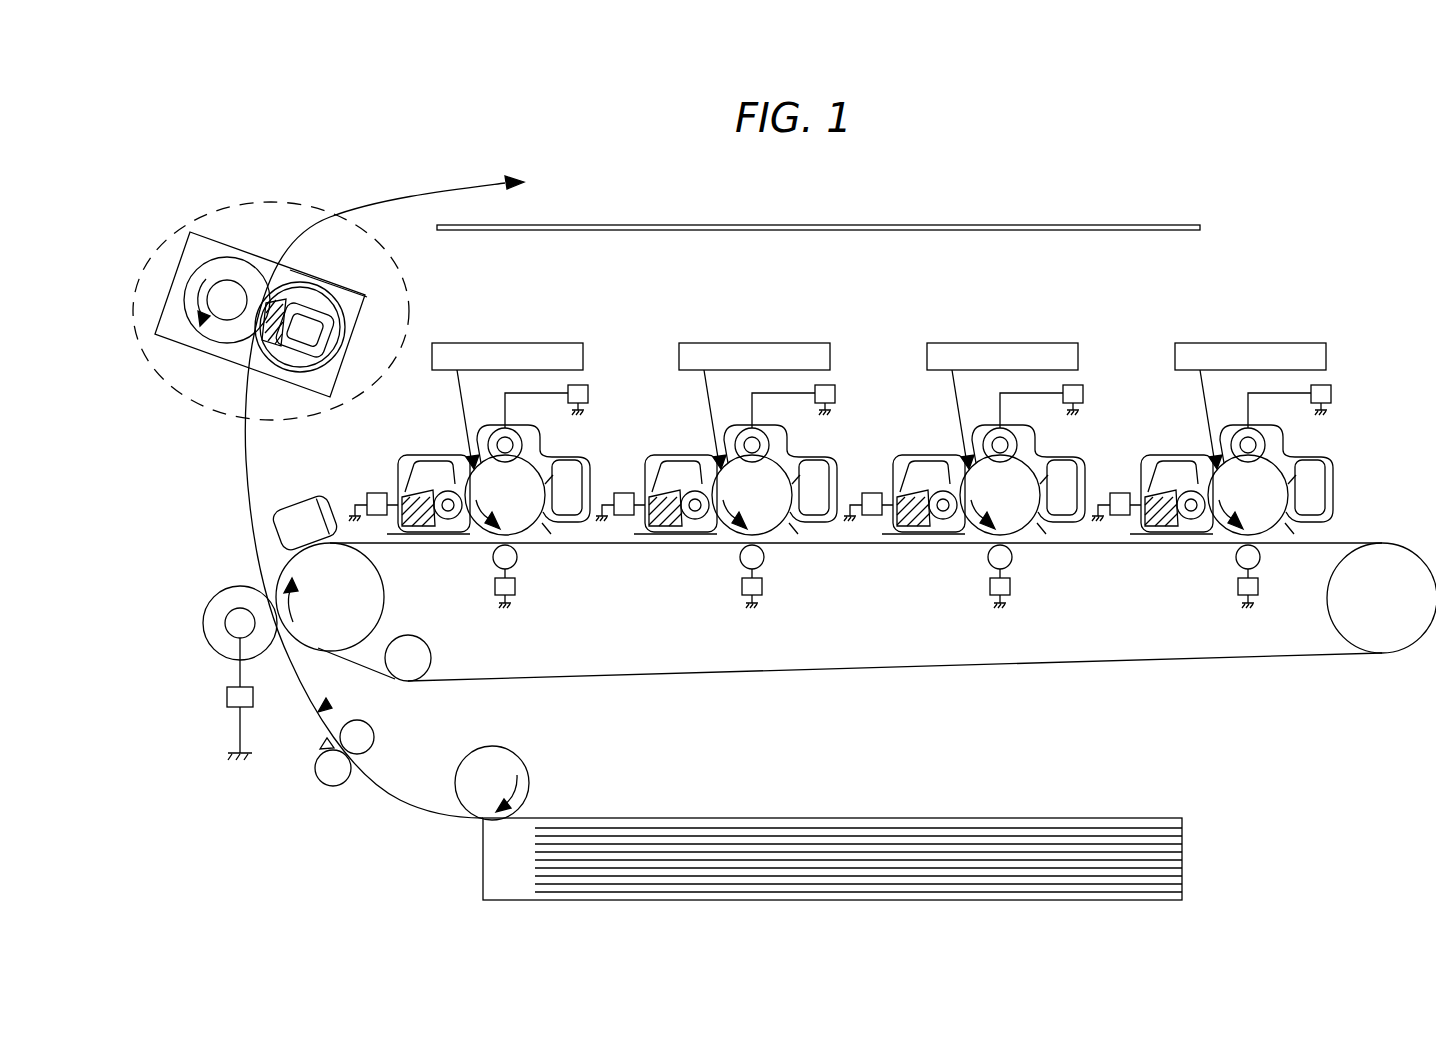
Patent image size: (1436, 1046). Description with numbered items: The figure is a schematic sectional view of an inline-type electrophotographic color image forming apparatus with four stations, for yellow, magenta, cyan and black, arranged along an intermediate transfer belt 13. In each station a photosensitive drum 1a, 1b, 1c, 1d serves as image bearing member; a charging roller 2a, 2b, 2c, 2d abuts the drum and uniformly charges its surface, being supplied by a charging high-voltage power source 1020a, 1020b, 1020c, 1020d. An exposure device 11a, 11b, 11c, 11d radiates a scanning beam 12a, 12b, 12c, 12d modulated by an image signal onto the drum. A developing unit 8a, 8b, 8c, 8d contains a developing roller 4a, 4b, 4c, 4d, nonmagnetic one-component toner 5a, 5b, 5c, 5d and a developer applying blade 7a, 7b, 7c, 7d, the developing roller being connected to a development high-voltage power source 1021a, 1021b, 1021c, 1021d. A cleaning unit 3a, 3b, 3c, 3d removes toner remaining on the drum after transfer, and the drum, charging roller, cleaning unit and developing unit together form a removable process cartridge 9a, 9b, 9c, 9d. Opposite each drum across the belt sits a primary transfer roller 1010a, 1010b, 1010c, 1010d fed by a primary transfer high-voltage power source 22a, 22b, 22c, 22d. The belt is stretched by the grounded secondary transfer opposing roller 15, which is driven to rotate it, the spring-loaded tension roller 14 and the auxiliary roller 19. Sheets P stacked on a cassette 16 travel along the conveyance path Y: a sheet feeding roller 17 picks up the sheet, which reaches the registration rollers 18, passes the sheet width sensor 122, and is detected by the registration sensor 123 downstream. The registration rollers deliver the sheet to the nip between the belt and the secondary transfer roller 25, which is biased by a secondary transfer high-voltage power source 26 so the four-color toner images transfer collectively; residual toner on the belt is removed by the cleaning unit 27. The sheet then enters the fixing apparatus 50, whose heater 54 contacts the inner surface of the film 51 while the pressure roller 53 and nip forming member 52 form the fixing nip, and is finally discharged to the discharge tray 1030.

The photosensitive drum 1a is at (528, 522).
The photosensitive drum 1b is at (770, 519).
The photosensitive drum 1c is at (1017, 519).
The photosensitive drum 1d is at (1266, 519).
The charging roller 2a is at (502, 428).
The charging roller 2b is at (746, 427).
The charging roller 2c is at (994, 427).
The charging roller 2d is at (1242, 427).
The cleaning unit 3a is at (566, 462).
The cleaning unit 3b is at (810, 471).
The cleaning unit 3c is at (1058, 471).
The cleaning unit 3d is at (1306, 471).
The developing roller 4a is at (446, 519).
The developing roller 4b is at (665, 530).
The developing roller 4c is at (913, 530).
The developing roller 4d is at (1161, 530).
The nonmagnetic one-component toner 5a is at (392, 534).
The nonmagnetic one-component toner 5b is at (662, 536).
The nonmagnetic one-component toner 5c is at (910, 536).
The nonmagnetic one-component toner 5d is at (1158, 536).
The developer applying blade 7a is at (450, 490).
The developer applying blade 7b is at (686, 470).
The developer applying blade 7c is at (934, 470).
The developer applying blade 7d is at (1182, 470).
The developing unit 8a is at (410, 477).
The developing unit 8b is at (663, 486).
The developing unit 8c is at (911, 486).
The developing unit 8d is at (1159, 486).
The process cartridge 9a is at (430, 488).
The process cartridge 9b is at (667, 457).
The process cartridge 9c is at (915, 457).
The process cartridge 9d is at (1163, 457).
The exposure device 11a is at (490, 343).
The exposure device 11b is at (749, 330).
The exposure device 11c is at (997, 330).
The exposure device 11d is at (1245, 330).
The scanning beam 12a is at (461, 412).
The scanning beam 12b is at (689, 419).
The scanning beam 12c is at (937, 419).
The scanning beam 12d is at (1185, 419).
The intermediate transfer belt 13 is at (1238, 660).
The tension roller 14 is at (1335, 603).
The secondary transfer opposing roller 15 is at (366, 603).
The cassette 16 is at (517, 870).
The sheet feeding roller 17 is at (503, 760).
The registration rollers 18 is at (363, 742).
The auxiliary roller 19 is at (423, 662).
The primary transfer high-voltage power source 22a is at (494, 586).
The primary transfer high-voltage power source 22b is at (729, 593).
The primary transfer high-voltage power source 22c is at (977, 593).
The primary transfer high-voltage power source 22d is at (1225, 593).
The secondary transfer roller 25 is at (225, 600).
The secondary transfer high-voltage power source 26 is at (232, 700).
The cleaning unit 27 is at (317, 505).
The fixing apparatus 50 is at (155, 350).
The film 51 is at (299, 373).
The nip forming member 52 is at (344, 320).
The pressure roller 53 is at (214, 332).
The heater 54 is at (293, 300).
The sheet width sensor 122 is at (320, 745).
The registration sensor 123 is at (352, 699).
The primary transfer roller 1010a is at (495, 549).
The primary transfer roller 1010b is at (715, 563).
The primary transfer roller 1010c is at (963, 563).
The primary transfer roller 1010d is at (1211, 563).
The charging high-voltage power source 1020a is at (585, 385).
The charging high-voltage power source 1020b is at (818, 368).
The charging high-voltage power source 1020c is at (1066, 368).
The charging high-voltage power source 1020d is at (1314, 368).
The development high-voltage power source 1021a is at (375, 493).
The development high-voltage power source 1021b is at (612, 490).
The development high-voltage power source 1021c is at (860, 490).
The development high-voltage power source 1021d is at (1108, 490).
The discharge tray 1030 is at (1093, 225).
The sheet P is at (592, 825).
The conveyance path Y is at (394, 194).